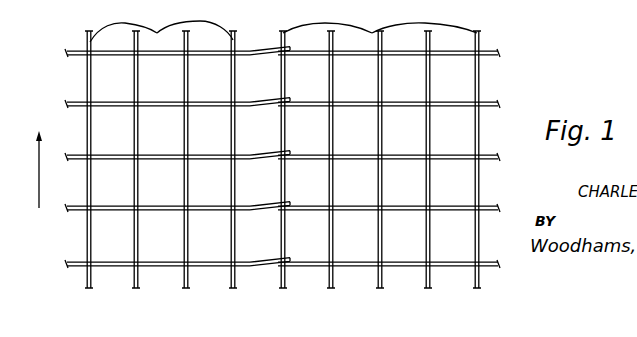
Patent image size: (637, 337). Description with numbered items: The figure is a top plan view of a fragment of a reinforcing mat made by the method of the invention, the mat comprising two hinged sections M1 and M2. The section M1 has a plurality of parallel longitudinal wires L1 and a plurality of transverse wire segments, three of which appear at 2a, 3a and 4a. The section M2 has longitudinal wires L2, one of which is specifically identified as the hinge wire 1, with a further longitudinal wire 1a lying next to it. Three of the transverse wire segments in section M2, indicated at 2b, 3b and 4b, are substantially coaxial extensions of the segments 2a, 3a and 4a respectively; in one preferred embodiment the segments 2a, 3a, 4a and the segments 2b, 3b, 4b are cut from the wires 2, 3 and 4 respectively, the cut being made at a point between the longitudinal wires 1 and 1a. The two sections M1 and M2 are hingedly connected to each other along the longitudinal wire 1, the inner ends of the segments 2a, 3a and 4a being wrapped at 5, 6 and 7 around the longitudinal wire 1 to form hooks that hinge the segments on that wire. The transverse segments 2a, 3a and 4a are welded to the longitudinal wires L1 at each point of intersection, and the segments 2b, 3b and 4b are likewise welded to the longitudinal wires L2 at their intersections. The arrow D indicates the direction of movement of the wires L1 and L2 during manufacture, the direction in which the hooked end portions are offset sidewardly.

The hinge wire 1 is at (287, 76).
The longitudinal wire 1a is at (333, 76).
The wire 2 is at (489, 261).
The transverse wire segment 2a is at (170, 262).
The transverse wire segment 2b is at (318, 262).
The wire 3 is at (489, 207).
The transverse wire segment 3a is at (170, 206).
The transverse wire segment 3b is at (315, 206).
The wire 4 is at (489, 154).
The transverse wire segment 4a is at (170, 155).
The transverse wire segment 4b is at (315, 155).
The wrapped inner end 5 is at (283, 260).
The wrapped inner end 6 is at (282, 204).
The wrapped inner end 7 is at (281, 151).
The longitudinal wires L1 is at (161, 24).
The longitudinal wires L2 is at (380, 20).
The hinged section M1 is at (80, 86).
The hinged section M2 is at (492, 82).
The arrow D is at (29, 169).